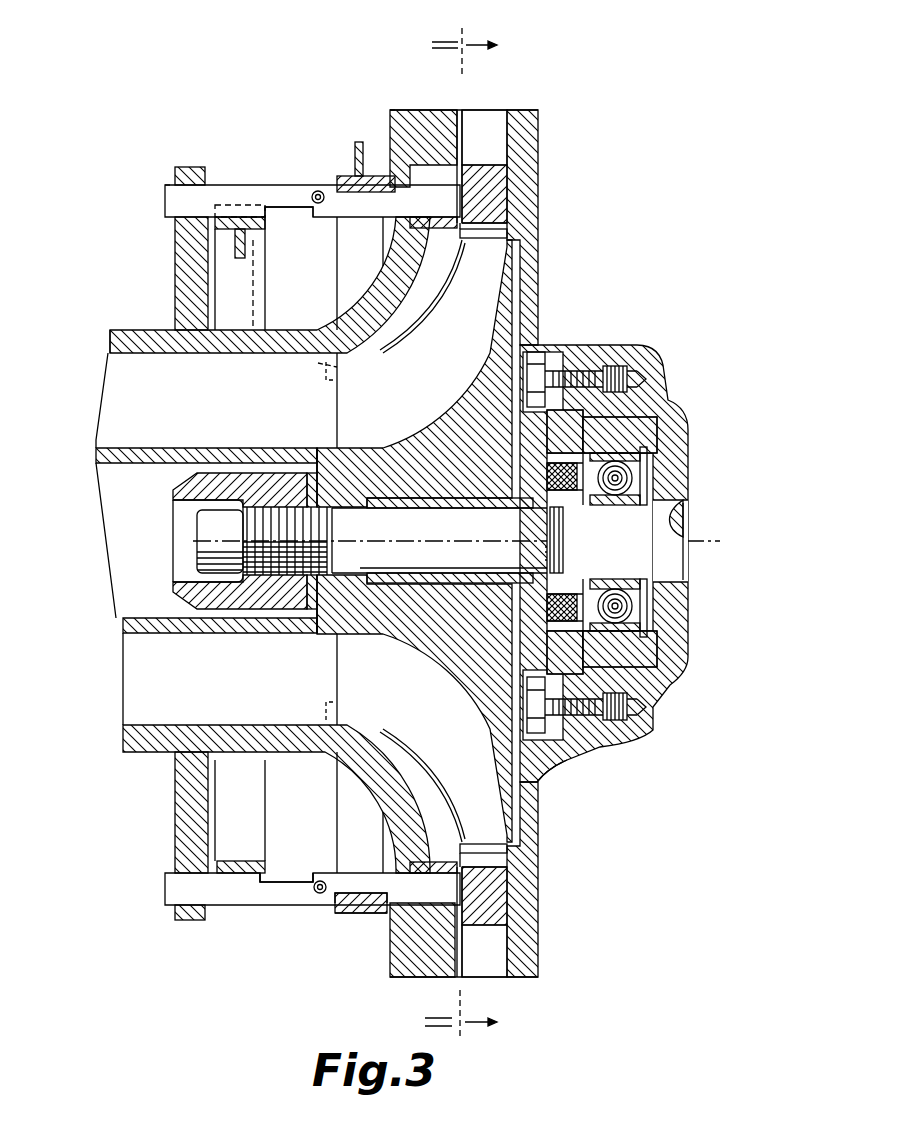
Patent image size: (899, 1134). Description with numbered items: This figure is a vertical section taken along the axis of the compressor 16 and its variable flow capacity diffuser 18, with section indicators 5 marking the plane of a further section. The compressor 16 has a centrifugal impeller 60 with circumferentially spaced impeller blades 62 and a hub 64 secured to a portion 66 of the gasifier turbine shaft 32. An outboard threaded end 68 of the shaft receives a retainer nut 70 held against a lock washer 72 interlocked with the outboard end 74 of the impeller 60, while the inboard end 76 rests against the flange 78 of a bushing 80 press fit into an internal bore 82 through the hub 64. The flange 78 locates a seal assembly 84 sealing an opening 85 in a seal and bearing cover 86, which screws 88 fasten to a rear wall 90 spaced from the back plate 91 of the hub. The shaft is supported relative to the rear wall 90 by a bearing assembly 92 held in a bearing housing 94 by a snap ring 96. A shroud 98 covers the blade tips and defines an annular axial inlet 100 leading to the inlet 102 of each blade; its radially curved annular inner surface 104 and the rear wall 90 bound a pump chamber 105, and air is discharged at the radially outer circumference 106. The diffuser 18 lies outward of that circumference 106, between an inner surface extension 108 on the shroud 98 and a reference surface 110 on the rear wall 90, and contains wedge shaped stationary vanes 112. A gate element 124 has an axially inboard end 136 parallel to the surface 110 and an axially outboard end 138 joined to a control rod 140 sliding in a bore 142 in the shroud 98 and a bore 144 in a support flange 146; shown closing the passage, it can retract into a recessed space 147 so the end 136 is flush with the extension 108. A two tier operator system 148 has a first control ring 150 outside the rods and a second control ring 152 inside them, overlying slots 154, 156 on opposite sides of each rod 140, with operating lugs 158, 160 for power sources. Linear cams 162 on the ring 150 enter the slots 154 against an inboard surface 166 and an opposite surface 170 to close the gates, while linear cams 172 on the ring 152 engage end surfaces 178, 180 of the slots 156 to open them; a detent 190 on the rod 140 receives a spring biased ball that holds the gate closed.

The section line 5- 5 is at (471, 528).
The compressor 16 is at (548, 287).
The variable flow capacity diffuser 18 is at (503, 98).
The gasifier turbine shaft 32 is at (688, 560).
The centrifugal impeller 60 is at (505, 367).
The impeller blades 62 is at (534, 245).
The hub 64 is at (487, 453).
The portion of the gasifier turbine shaft 66 is at (620, 538).
The outboard threaded end 68 is at (267, 576).
The retainer nut 70 is at (213, 600).
The lock washer 72 is at (310, 470).
The outboard end of the impeller 74 is at (313, 605).
The inboard end of the impeller 76 is at (533, 500).
The flange 78 is at (550, 497).
The bushing 80 is at (437, 508).
The internal bore 82 is at (397, 503).
The seal assembly 84 is at (560, 600).
The opening 85 is at (475, 670).
The seal and bearing cover 86 is at (577, 680).
The screws 88 is at (557, 363).
The rear wall 90 is at (533, 780).
The back plate 91 is at (477, 270).
The bearing assembly 92 is at (620, 604).
The bearing housing 94 is at (640, 657).
The snap ring 96 is at (645, 623).
The shroud 98 is at (388, 300).
The axial inlet 100 is at (220, 362).
The inlet of each blade 102 is at (366, 360).
The radially curved annular inner surface 104 is at (357, 330).
The pump chamber 105 is at (367, 347).
The radially outer circumference 106 is at (493, 247).
The inner surface extension 108 is at (460, 150).
The surface on the rear wall 110 is at (495, 125).
The wedge shaped stationary vanes 112 is at (520, 140).
The gate element 124 is at (495, 160).
The axially inboard end 136 is at (508, 185).
The axially outboard end 138 is at (457, 132).
The control rod 140 is at (273, 197).
The bore in the shroud 142 is at (382, 222).
The bore in the support flange 144 is at (180, 188).
The support flange 146 is at (187, 252).
The recessed space 147 is at (432, 280).
The two tier operator system 148 is at (240, 178).
The first control ring 150 is at (361, 142).
The second control ring 152 is at (262, 232).
The slot 154 is at (347, 195).
The slot 156 is at (297, 205).
The operating lug 158 is at (357, 175).
The operating lug 160 is at (237, 230).
The linear cam 162 is at (328, 176).
The inboard surface 166 is at (380, 913).
The opposite surface 170 is at (347, 913).
The linear cam 172 is at (243, 262).
The end surface 178 is at (270, 875).
The end surface 180 is at (307, 882).
The detent 190 is at (320, 880).